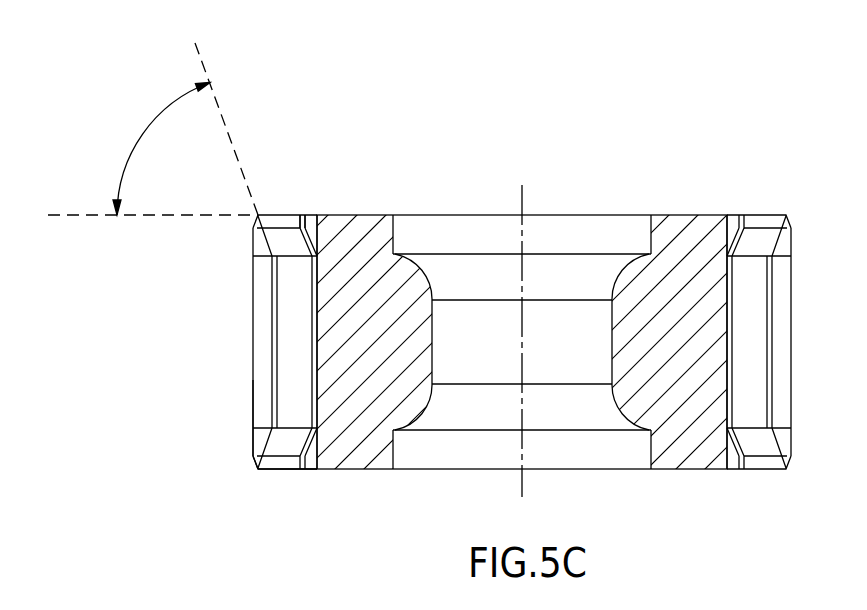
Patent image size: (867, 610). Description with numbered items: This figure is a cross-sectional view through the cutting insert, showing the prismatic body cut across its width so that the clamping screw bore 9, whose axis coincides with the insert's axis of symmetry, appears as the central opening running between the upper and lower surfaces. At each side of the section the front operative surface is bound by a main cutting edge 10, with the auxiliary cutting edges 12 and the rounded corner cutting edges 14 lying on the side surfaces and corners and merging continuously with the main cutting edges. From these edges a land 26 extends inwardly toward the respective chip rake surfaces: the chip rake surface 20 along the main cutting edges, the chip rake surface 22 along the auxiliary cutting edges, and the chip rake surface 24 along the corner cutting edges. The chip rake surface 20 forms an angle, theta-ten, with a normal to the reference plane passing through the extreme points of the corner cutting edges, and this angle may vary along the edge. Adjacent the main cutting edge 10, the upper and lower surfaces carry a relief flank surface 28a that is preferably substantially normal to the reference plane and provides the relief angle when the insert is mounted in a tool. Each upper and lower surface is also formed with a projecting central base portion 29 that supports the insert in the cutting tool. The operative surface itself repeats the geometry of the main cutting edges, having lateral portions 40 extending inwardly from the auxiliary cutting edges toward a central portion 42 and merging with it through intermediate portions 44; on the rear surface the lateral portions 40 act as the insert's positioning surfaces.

The clamping screw bore 9 is at (553, 224).
The main cutting edge 10 is at (302, 216).
The auxiliary cutting edge 12 is at (253, 270).
The corner cutting edge 14 is at (260, 469).
The chip rake surface 20 is at (267, 443).
The chip rake surface 22 is at (260, 412).
The chip rake surface 24 is at (256, 250).
The land 26 is at (292, 469).
The relief flank surface 28a is at (270, 469).
The projecting central base portion 29 is at (370, 216).
The lateral portion 40 is at (272, 298).
The central portion 42 is at (290, 363).
The intermediate portion 44 is at (290, 327).